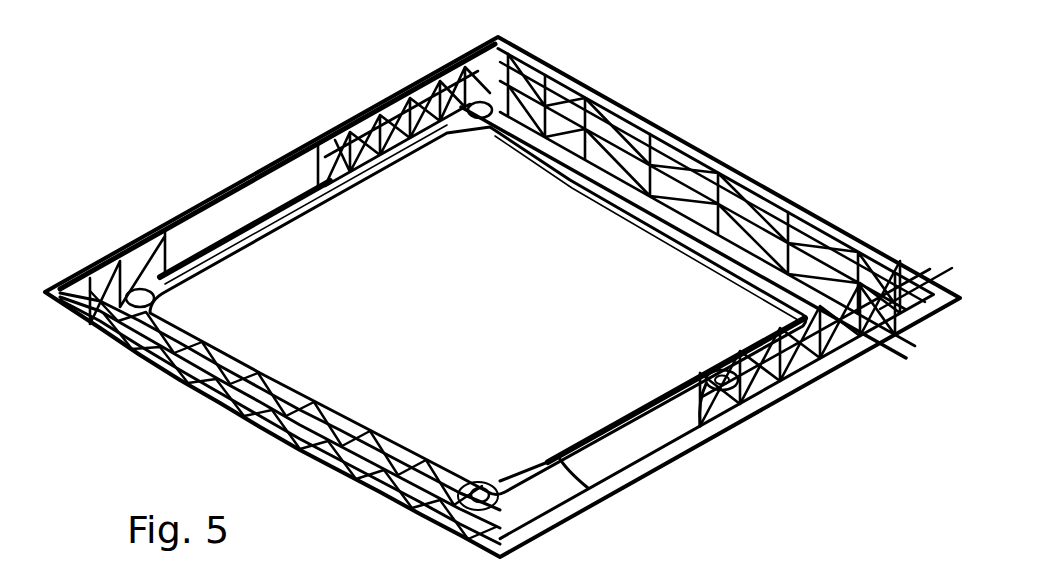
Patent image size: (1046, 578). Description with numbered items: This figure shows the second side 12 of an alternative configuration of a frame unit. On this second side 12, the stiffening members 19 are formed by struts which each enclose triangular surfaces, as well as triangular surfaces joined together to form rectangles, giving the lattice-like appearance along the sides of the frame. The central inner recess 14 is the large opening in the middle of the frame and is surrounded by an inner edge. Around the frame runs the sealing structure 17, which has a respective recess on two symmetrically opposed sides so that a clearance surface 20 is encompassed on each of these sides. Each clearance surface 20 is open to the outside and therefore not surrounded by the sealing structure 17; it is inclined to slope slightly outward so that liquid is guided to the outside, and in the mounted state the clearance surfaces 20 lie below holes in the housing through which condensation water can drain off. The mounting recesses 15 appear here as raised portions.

The second side 12 is at (622, 102).
The stiffening members 19 is at (680, 133).
The inner recess 14 is at (505, 333).
The mounting recesses 15 is at (700, 372).
The sealing structure 17 is at (650, 420).
The clearance surface 20 is at (617, 473).